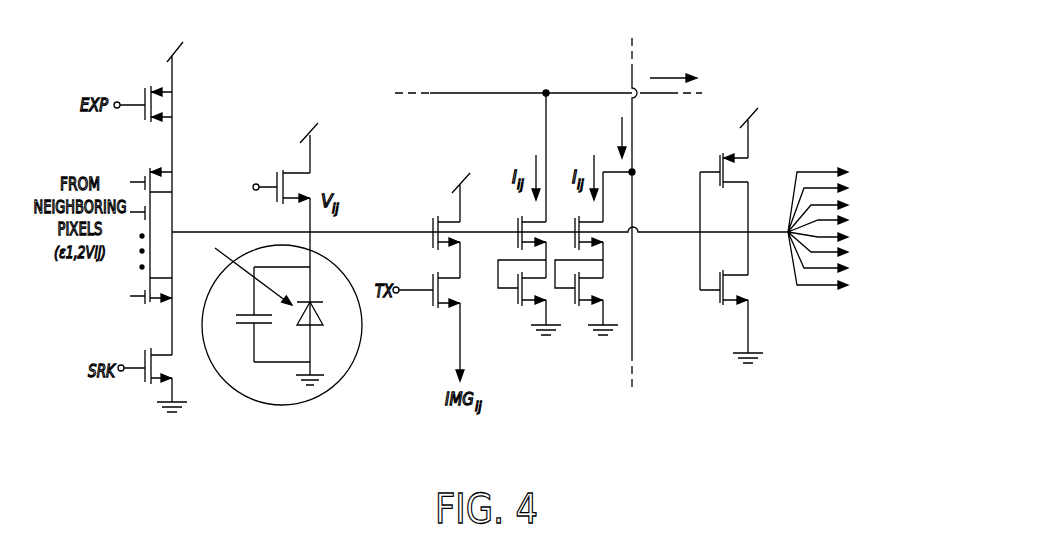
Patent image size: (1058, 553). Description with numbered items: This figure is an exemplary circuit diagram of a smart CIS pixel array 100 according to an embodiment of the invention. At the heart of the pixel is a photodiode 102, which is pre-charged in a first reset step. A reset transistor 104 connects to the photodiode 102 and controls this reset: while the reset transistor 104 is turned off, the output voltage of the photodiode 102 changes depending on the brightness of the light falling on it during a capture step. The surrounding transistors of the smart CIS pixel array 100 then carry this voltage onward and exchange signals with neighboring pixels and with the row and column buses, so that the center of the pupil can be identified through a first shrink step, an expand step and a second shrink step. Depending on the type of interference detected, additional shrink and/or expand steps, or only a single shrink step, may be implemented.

The smart CIS pixel array 100 is at (724, 402).
The photodiode 102 is at (316, 324).
The RST transistor 104 is at (294, 183).